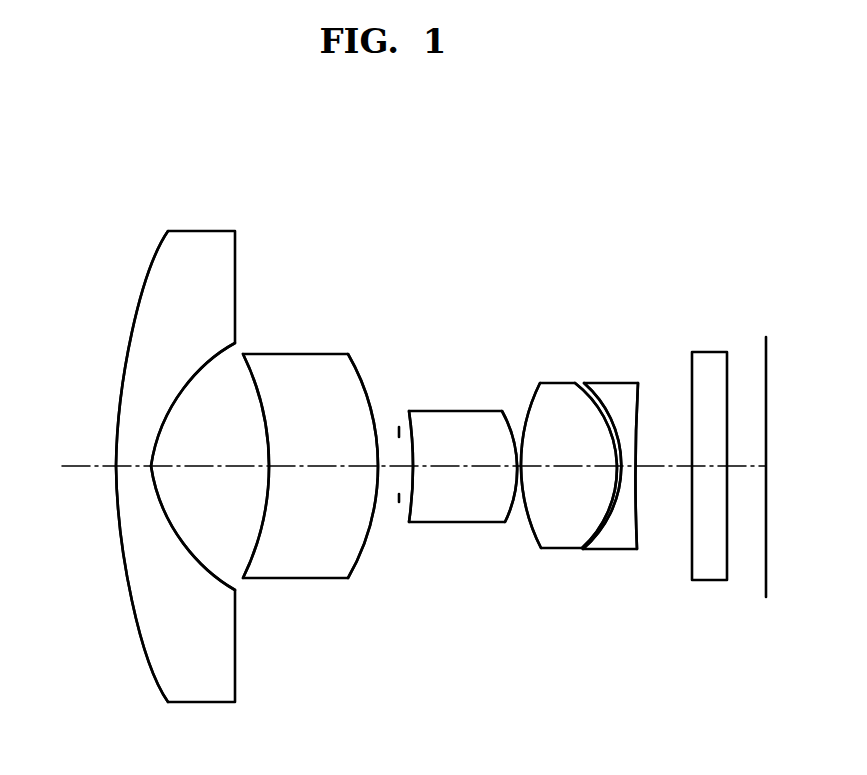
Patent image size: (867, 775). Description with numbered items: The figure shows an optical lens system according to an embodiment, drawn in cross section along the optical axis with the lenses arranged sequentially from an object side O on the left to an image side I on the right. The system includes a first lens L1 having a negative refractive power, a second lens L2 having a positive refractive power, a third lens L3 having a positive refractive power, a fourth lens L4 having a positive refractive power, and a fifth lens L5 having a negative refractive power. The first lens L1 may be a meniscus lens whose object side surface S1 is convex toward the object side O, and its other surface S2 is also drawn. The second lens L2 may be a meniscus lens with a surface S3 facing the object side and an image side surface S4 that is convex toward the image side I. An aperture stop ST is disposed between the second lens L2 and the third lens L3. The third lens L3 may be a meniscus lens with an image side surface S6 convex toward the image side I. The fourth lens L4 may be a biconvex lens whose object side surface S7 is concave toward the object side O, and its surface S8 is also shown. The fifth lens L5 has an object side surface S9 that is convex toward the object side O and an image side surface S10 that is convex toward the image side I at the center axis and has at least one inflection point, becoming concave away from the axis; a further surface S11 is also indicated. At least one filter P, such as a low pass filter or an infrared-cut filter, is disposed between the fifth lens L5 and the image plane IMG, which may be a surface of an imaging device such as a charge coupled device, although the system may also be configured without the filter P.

The object side O is at (398, 467).
The image side I is at (786, 467).
The first lens L1 is at (197, 236).
The second lens L2 is at (305, 358).
The third lens L3 is at (462, 416).
The fourth lens L4 is at (562, 388).
The fifth lens L5 is at (620, 388).
The aperture stop ST is at (399, 428).
The filter P is at (709, 355).
The image plane IMG is at (766, 356).
The object side surface of the first lens S1 is at (133, 617).
The image-side surface of first lens S2 is at (195, 562).
The object-side surface of second lens S3 is at (255, 535).
The image side surface of the second lens S4 is at (360, 554).
The image side surface of the third lens S6 is at (412, 480).
The object side surface of the fourth lens S7 is at (505, 522).
The object-side surface of fourth lens S8 is at (535, 532).
The object side surface of the fifth lens S9 is at (582, 547).
The image side surface of the fifth lens S10 is at (595, 533).
The image-side surface of fifth lens S11 is at (638, 527).